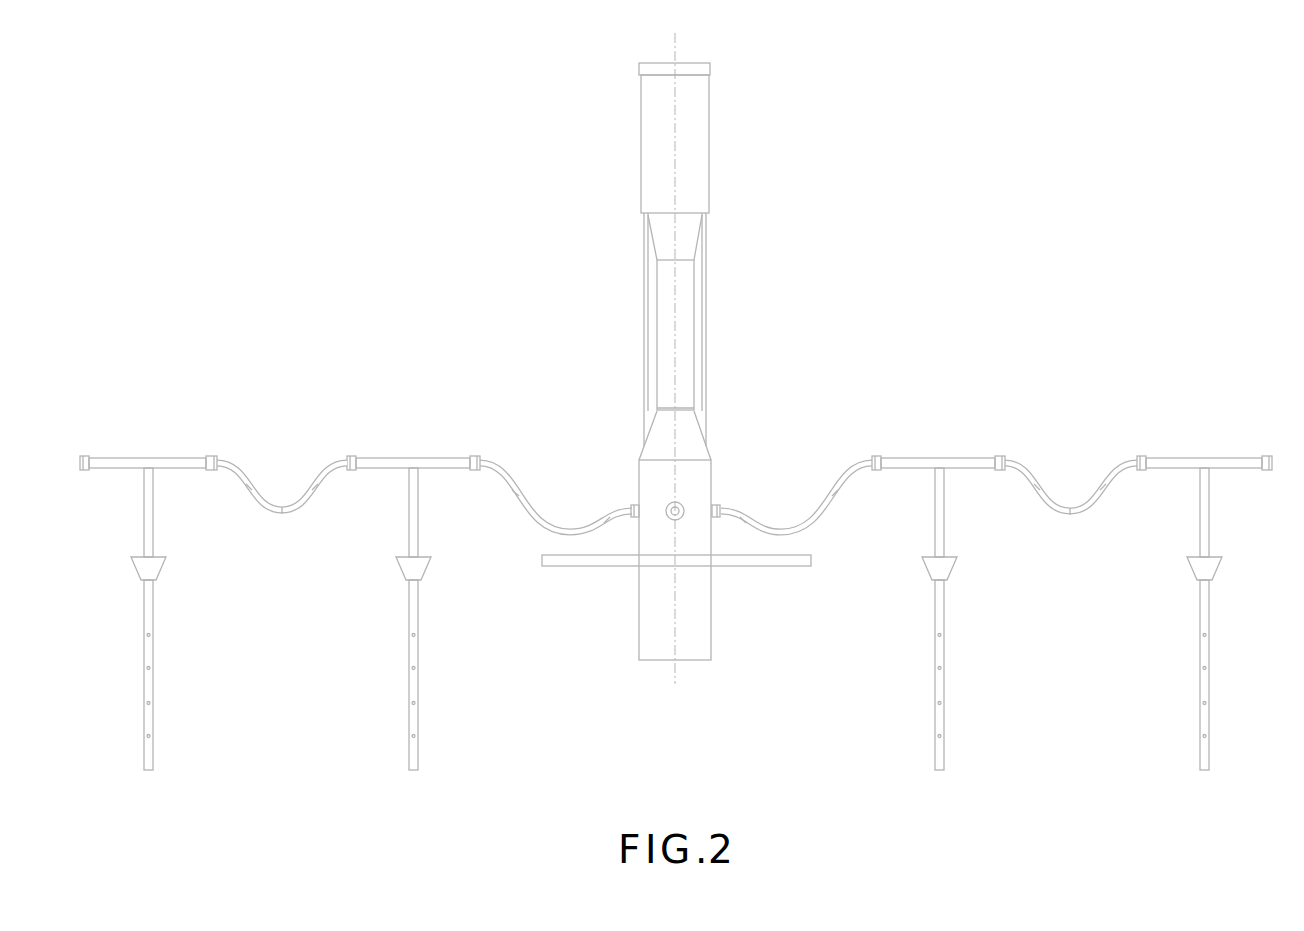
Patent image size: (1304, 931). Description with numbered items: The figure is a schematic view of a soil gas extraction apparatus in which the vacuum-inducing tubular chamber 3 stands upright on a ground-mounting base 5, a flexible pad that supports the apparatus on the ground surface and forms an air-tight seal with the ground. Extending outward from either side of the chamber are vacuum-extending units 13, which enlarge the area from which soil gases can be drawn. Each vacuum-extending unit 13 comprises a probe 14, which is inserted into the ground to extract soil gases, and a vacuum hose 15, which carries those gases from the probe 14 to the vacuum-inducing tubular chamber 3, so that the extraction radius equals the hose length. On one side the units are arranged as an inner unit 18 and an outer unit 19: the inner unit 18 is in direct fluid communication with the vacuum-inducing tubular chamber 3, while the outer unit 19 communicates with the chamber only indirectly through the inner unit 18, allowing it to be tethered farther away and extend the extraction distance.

The vacuum-inducing tubular chamber 3 is at (703, 490).
The ground-mounting base 5 is at (763, 562).
The vacuum-extending unit 13 is at (678, 537).
The probe 14 is at (168, 462).
The vacuum hose 15 is at (270, 512).
The inner unit 18 is at (953, 463).
The outer unit 19 is at (1177, 462).